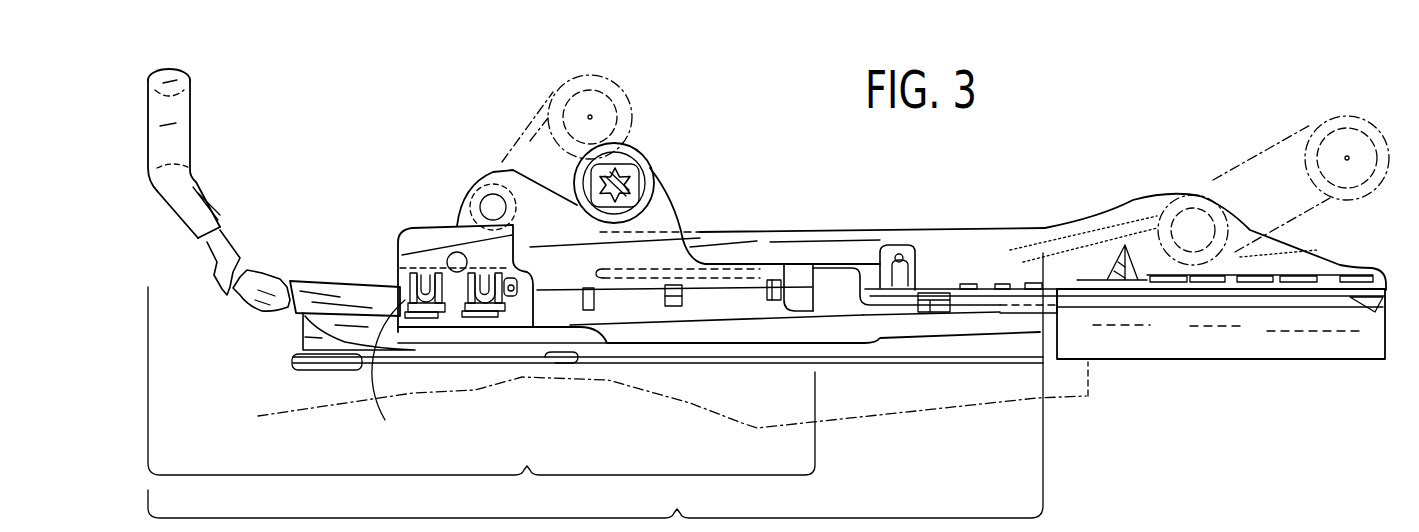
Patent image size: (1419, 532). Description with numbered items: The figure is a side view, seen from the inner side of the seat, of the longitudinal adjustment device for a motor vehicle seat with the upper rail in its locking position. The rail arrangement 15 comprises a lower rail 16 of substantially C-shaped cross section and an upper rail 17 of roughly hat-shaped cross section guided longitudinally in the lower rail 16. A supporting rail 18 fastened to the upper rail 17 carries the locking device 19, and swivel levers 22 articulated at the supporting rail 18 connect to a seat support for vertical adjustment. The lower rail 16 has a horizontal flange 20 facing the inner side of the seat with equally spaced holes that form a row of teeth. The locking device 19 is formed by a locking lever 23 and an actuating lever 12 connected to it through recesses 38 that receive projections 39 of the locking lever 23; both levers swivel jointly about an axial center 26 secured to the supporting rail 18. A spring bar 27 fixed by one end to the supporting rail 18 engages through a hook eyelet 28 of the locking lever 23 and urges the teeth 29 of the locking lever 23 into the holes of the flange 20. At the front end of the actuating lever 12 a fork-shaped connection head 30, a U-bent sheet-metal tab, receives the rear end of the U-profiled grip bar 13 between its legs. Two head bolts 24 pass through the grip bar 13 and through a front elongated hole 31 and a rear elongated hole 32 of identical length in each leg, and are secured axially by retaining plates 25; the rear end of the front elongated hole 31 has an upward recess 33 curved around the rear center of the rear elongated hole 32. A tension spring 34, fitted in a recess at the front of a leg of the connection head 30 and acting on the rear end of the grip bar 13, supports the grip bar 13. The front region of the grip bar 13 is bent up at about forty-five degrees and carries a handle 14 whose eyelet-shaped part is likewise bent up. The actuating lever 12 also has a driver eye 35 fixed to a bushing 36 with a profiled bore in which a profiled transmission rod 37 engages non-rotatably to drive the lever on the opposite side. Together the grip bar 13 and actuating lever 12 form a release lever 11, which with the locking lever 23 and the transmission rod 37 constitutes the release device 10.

The release device 10 is at (595, 392).
The release lever 11 is at (481, 399).
The actuating lever 12 is at (575, 307).
The grip bar 13 is at (333, 290).
The handle 14 is at (178, 150).
The rail arrangement 15 is at (1115, 368).
The lower rail 16 is at (1225, 342).
The upper rail 17 is at (1102, 280).
The supporting rail 18 is at (950, 267).
The locking device 19 is at (648, 347).
The horizontal flange 20 is at (1166, 298).
The swivel levers 22 is at (530, 128).
The locking lever 23 is at (832, 302).
The head bolts 24 is at (412, 300).
The retaining plates 25 is at (438, 303).
The axial center 26 is at (677, 308).
The spring bar 27 is at (837, 262).
The hook eyelet 28 is at (922, 265).
The teeth 29 is at (1040, 284).
The connection head 30 is at (397, 245).
The front elongated hole 31 is at (462, 303).
The rear elongated hole 32 is at (549, 353).
The recess 33 is at (450, 253).
The tension spring 34 is at (475, 345).
The driver eye 35 is at (646, 173).
The bushing 36 is at (642, 150).
The transmission rod 37 is at (636, 187).
The recesses 38 is at (790, 300).
The projections 39 is at (772, 280).